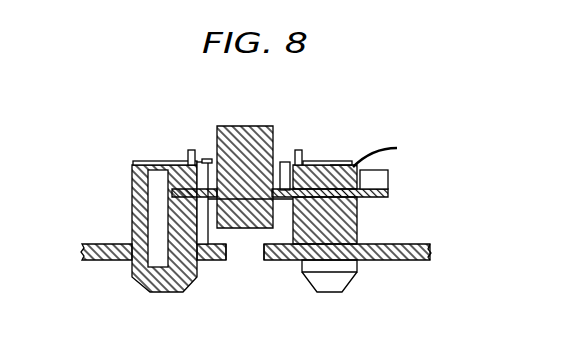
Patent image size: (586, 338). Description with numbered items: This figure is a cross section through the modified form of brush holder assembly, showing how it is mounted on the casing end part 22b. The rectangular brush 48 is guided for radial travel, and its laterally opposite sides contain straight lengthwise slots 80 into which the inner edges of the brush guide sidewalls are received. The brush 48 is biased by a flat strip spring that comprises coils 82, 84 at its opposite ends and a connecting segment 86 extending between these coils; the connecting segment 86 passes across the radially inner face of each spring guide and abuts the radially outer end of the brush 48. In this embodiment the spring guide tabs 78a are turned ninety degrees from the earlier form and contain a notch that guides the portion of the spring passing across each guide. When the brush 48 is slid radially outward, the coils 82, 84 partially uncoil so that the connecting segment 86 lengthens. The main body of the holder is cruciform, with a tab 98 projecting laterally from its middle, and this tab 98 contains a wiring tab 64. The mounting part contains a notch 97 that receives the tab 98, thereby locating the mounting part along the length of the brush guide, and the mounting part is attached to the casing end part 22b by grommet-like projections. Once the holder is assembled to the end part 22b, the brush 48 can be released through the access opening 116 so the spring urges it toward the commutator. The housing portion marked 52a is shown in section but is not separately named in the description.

The casing end part 22b is at (98, 261).
The brush 48 is at (238, 126).
The housing body 52a is at (132, 208).
The wiring tab 64 is at (389, 178).
The spring guide tab 78a is at (190, 150).
The slot 80 is at (240, 274).
The coil 82 is at (140, 168).
The coil 84 is at (345, 162).
The connecting segment 86 is at (213, 162).
The notch 97 is at (386, 151).
The tab 98 is at (337, 163).
The access opening 116 is at (253, 253).